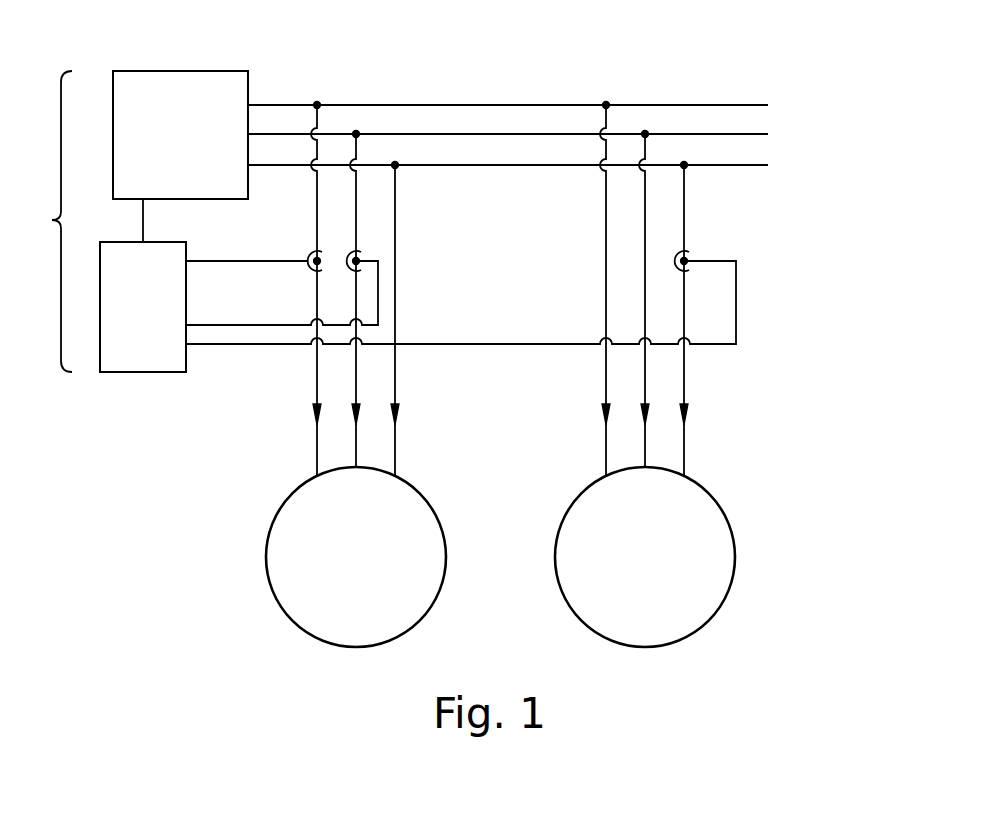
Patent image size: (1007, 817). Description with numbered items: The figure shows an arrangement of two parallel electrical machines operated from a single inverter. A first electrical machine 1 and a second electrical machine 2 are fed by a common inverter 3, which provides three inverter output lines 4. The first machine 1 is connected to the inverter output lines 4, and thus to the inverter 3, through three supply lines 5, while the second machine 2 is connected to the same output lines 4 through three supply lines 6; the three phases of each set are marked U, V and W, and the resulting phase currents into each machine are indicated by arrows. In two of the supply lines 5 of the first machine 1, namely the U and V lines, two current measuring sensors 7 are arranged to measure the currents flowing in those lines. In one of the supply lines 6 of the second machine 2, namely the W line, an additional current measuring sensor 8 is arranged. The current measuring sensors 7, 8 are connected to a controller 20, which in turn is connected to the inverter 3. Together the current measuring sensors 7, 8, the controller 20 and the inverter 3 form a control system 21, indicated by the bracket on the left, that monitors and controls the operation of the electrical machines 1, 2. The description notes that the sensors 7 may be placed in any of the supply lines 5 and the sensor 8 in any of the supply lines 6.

The first electrical machine 1 is at (313, 541).
The second electrical machine 2 is at (683, 550).
The inverter 3 is at (155, 108).
The inverter output lines 4 is at (527, 165).
The supply lines 5 is at (395, 218).
The supply lines 6 is at (684, 225).
The current measuring sensors 7 is at (350, 263).
The current measuring sensor 8 is at (686, 260).
The controller 20 is at (168, 321).
The control system 21 is at (44, 221).